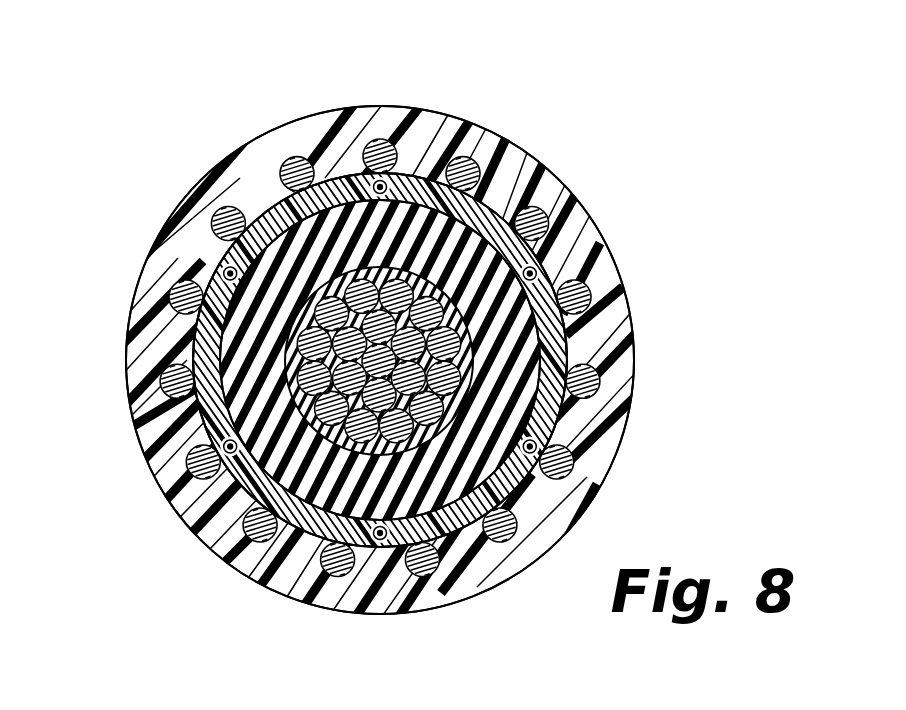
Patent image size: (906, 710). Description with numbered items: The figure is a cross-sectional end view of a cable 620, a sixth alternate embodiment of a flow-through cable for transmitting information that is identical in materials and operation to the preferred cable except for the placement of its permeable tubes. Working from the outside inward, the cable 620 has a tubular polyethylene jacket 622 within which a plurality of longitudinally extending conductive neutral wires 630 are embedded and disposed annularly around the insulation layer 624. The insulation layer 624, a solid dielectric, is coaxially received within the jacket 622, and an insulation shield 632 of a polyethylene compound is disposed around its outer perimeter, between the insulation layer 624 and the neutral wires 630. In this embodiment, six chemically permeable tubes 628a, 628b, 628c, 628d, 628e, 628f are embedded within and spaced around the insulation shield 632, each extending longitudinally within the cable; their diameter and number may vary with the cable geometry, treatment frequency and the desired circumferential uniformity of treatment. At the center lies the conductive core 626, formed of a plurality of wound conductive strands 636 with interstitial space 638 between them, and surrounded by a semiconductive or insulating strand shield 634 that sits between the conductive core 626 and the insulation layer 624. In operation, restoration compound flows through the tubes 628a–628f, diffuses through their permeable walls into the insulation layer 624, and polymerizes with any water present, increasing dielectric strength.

The cable 620 is at (597, 147).
The jacket 622 is at (543, 163).
The insulation layer 624 is at (228, 358).
The conductive core 626 is at (470, 342).
The chemically permeable tube 628a is at (376, 186).
The chemically permeable tube 628b is at (537, 272).
The chemically permeable tube 628c is at (537, 446).
The chemically permeable tube 628d is at (384, 542).
The chemically permeable tube 628e is at (226, 455).
The chemically permeable tube 628f is at (224, 270).
The conductive neutral wire 630 is at (230, 207).
The insulation shield 632 is at (195, 438).
The strand shield 634 is at (500, 467).
The conductive strand 636 is at (193, 344).
The interstitial space 638 is at (300, 527).